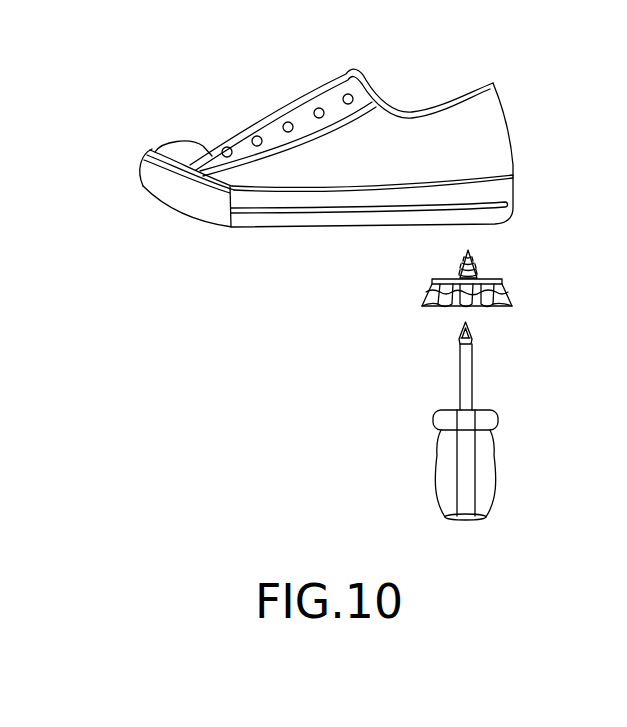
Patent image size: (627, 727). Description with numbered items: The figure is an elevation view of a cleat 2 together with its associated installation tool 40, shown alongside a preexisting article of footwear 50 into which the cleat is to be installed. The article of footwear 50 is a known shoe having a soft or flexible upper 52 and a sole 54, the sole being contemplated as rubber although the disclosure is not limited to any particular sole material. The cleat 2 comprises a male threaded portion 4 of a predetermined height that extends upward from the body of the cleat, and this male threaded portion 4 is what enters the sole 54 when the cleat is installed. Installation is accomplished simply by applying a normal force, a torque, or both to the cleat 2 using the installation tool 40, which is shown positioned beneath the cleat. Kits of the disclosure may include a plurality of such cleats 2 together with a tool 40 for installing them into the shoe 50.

The cleat 2 is at (389, 292).
The male threaded portion 4 is at (495, 260).
The installation tool 40 is at (410, 421).
The article of footwear 50 is at (353, 173).
The upper 52 is at (507, 127).
The sole 54 is at (514, 185).